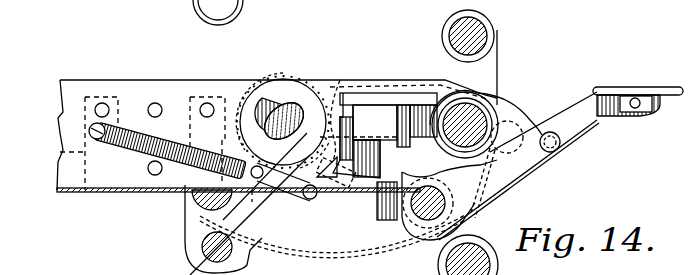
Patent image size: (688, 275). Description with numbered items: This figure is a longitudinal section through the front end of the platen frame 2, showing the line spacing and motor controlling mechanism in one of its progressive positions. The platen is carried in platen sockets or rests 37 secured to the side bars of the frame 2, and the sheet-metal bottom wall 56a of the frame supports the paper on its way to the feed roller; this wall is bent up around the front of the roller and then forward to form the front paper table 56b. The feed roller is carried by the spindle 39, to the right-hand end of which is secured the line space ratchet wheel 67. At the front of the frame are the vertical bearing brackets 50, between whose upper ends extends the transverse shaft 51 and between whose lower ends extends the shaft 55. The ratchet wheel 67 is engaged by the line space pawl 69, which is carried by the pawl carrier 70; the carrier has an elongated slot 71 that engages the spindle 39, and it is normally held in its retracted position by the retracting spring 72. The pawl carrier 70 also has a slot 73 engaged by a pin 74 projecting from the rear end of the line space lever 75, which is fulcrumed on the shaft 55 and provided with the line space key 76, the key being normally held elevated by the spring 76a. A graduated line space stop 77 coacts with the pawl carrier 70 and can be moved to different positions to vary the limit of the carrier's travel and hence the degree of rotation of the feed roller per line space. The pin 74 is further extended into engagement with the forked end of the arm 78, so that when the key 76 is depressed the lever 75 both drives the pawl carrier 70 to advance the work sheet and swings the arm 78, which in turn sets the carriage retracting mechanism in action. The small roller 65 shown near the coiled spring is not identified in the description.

The platen frame 2 is at (68, 87).
The platen sockets or rests 37 is at (85, 106).
The bottom wall 56a is at (82, 193).
The front paper table 56b is at (373, 90).
The retracting spring 72 is at (127, 147).
The line space ratchet wheel 67 is at (265, 78).
The spindle 39 is at (292, 106).
The elongated slot 71 is at (290, 135).
The pawl carrier 70 is at (310, 98).
The graduated line space stop 77 is at (370, 113).
The roller 65 is at (498, 112).
The spring 76a is at (498, 110).
The line space key 76 is at (628, 90).
The line space lever 75 is at (541, 162).
The vertical bearing brackets 50 is at (497, 26).
The transverse shaft 51 is at (497, 40).
The shaft 55 is at (475, 216).
The arm 78 is at (258, 245).
The slot 73 is at (292, 215).
The pin 74 is at (320, 200).
The line space pawl 69 is at (350, 185).